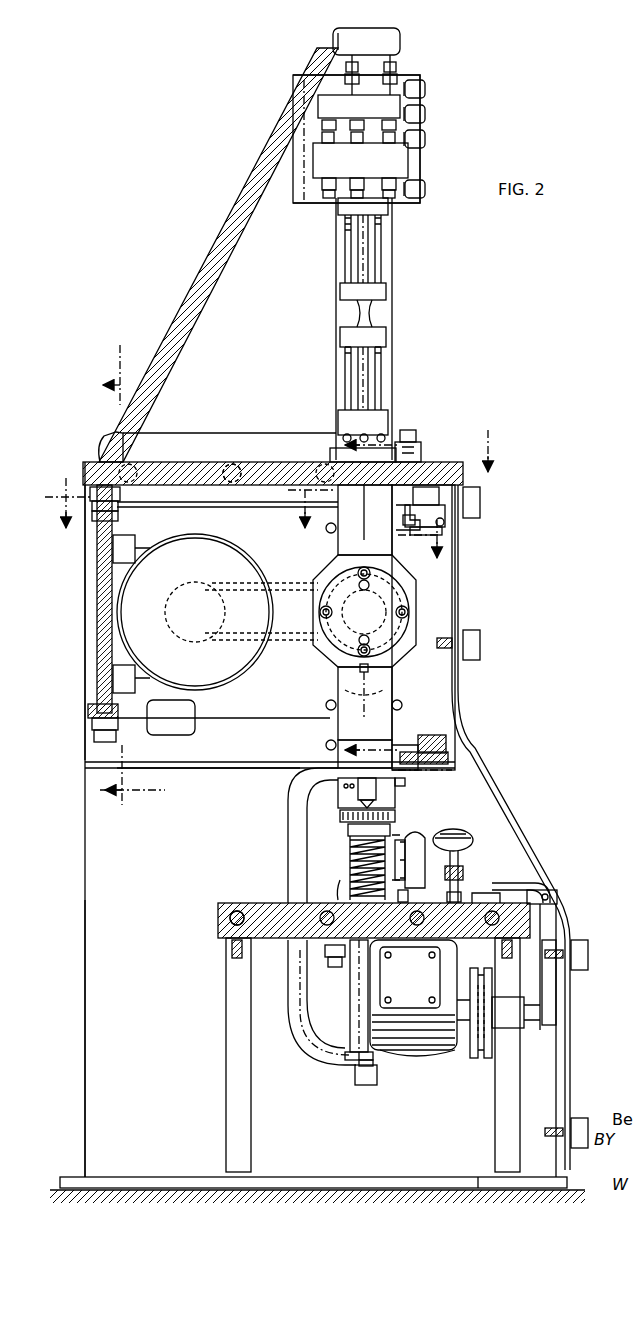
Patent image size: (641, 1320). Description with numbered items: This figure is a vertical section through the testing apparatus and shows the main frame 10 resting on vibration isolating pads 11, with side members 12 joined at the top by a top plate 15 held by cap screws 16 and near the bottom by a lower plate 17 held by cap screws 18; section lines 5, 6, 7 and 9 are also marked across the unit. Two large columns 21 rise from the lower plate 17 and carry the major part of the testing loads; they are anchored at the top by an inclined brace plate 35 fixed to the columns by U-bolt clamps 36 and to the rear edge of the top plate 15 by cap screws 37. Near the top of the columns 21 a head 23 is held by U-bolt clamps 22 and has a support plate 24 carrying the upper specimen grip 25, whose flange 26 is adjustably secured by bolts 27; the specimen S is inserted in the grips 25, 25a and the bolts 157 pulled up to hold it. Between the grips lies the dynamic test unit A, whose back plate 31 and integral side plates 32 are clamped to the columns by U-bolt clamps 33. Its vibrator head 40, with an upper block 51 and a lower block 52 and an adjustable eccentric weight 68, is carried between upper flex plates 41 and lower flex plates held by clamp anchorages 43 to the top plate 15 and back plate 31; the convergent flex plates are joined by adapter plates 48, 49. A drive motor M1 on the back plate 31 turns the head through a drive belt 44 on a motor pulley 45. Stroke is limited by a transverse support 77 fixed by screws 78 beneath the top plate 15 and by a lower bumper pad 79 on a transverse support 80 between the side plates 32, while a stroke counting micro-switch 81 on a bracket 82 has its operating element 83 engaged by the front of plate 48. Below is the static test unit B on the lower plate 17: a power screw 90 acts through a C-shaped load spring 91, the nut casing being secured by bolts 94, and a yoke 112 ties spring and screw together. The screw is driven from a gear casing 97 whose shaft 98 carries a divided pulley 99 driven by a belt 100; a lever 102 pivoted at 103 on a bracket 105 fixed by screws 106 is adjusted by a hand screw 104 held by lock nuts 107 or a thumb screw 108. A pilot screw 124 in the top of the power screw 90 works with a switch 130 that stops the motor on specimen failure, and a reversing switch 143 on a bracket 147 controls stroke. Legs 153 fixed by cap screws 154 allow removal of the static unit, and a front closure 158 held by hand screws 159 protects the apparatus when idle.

The main frame 10 is at (82, 852).
The vibration isolating pads 11 is at (80, 1176).
The side members 12 is at (84, 908).
The top plate 15 is at (465, 466).
The cap screws 16 is at (234, 462).
The lower plate 17 is at (218, 924).
The cap screws 18 is at (256, 905).
The columns 21 is at (392, 312).
The U-bolt clamps 22 is at (428, 139).
The head 23 is at (420, 144).
The support plate 24 is at (408, 160).
The specimen grip 25 is at (372, 259).
The specimen grip 25a is at (372, 380).
The flange 26 is at (318, 106).
The bolts 27 is at (396, 66).
The back plate 31 is at (97, 592).
The side plates 32 is at (450, 735).
The U-bolt clamps 33 is at (327, 530).
The inclined brace plate 35 is at (194, 276).
The U-bolt clamps 36 is at (372, 45).
The cap screws 37 is at (104, 438).
The vibrator head 40 is at (420, 584).
The upper flex plates 41 is at (228, 508).
The clamp anchorages 43 is at (90, 510).
The drive belt 44 is at (268, 645).
The motor pulley 45 is at (178, 640).
The adapter plate 48 is at (376, 500).
The adapter plate 49 is at (412, 748).
The upper block 51 is at (338, 550).
The lower block 52 is at (338, 690).
The eccentric weight 68 is at (372, 690).
The transverse support 77 is at (422, 450).
The screws 78 is at (410, 430).
The lower bumper pad 79 is at (440, 743).
The transverse support 80 is at (445, 758).
The stroke counting micro-switch 81 is at (442, 524).
The bracket 82 is at (440, 495).
The operating element 83 is at (400, 522).
The power screw 90 is at (350, 868).
The C-shaped load spring 91 is at (288, 820).
The bolts 94 is at (330, 978).
The gear casing 97 is at (350, 1040).
The shaft 98 is at (445, 1052).
The pulley 99 is at (490, 1060).
The belt 100 is at (478, 1060).
The lever 102 is at (552, 880).
The pivot 103 is at (558, 897).
The hand screw 104 is at (468, 838).
The bracket 105 is at (556, 912).
The screws 106 is at (538, 872).
The lock nuts 107 is at (425, 857).
The thumb screw 108 is at (462, 878).
The yoke 112 is at (364, 1086).
The pilot screw 124 is at (346, 822).
The switch 130 is at (378, 790).
The reversing switch 143 is at (420, 842).
The bracket 147 is at (418, 892).
The legs 153 is at (248, 1126).
The cap screws 154 is at (236, 910).
The bolts 157 is at (380, 238).
The front closure 158 is at (460, 610).
The hand screws 159 is at (480, 504).
The section line 5 is at (266, 479).
The section line 6 is at (396, 542).
The section line 7 is at (388, 440).
The section line 9 is at (132, 575).
The dynamic test unit A is at (440, 603).
The static test unit B is at (500, 848).
The specimen S is at (352, 316).
The drive motor M1 is at (204, 569).